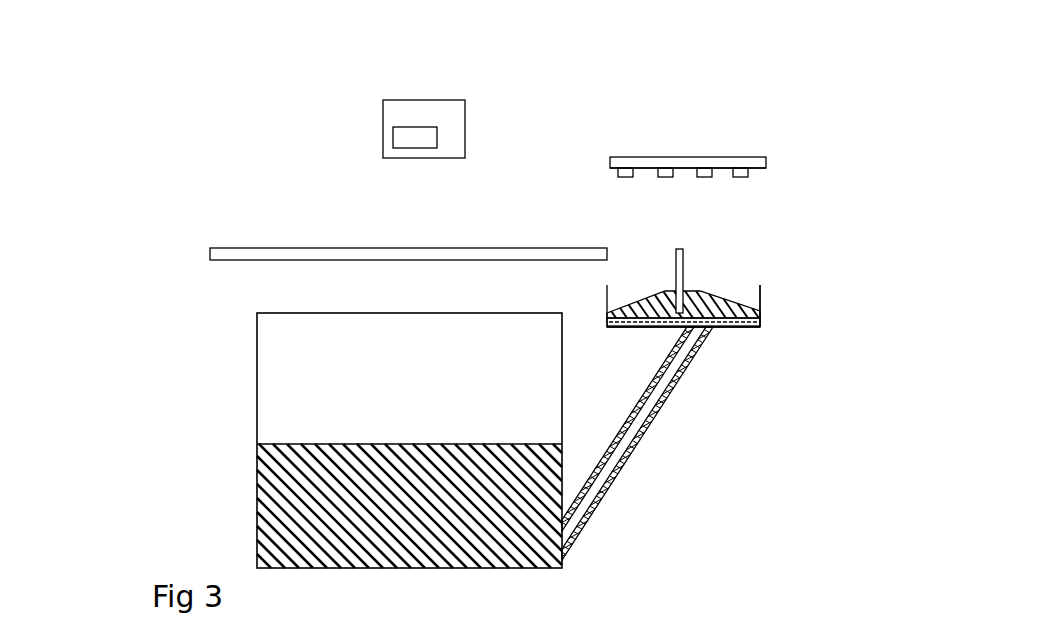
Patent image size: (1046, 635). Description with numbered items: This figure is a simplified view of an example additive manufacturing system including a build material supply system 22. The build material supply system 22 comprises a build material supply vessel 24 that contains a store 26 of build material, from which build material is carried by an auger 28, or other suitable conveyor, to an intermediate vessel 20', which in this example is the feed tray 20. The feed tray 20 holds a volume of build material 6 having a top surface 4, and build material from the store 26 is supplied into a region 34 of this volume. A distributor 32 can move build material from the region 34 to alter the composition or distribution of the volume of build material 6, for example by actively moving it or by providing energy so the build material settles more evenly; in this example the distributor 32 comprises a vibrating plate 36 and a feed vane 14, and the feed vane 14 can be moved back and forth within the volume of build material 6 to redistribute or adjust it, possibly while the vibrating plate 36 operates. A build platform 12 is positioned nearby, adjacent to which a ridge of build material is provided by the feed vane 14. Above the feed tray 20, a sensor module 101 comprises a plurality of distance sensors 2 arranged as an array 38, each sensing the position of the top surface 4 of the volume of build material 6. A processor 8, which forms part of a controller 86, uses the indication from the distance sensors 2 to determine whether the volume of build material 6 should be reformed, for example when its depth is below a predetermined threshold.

The build material supply system 22 is at (180, 190).
The controller 86 is at (438, 100).
The processor 8 is at (403, 137).
The build platform 12 is at (225, 254).
The array 38 is at (670, 162).
The sensor module 101 is at (706, 162).
The distance sensor 2 is at (633, 177).
The intermediate vessel 20' is at (738, 285).
The feed tray 20 is at (811, 306).
The top surface 4 is at (716, 294).
The feed vane 14 is at (675, 280).
The volume of build material 6 is at (762, 322).
The vibrating plate 36 is at (643, 330).
The distributor 32 is at (752, 343).
The region 34 is at (712, 330).
The auger 28 is at (655, 420).
The build material supply vessel 24 is at (257, 370).
The store 26 is at (290, 495).